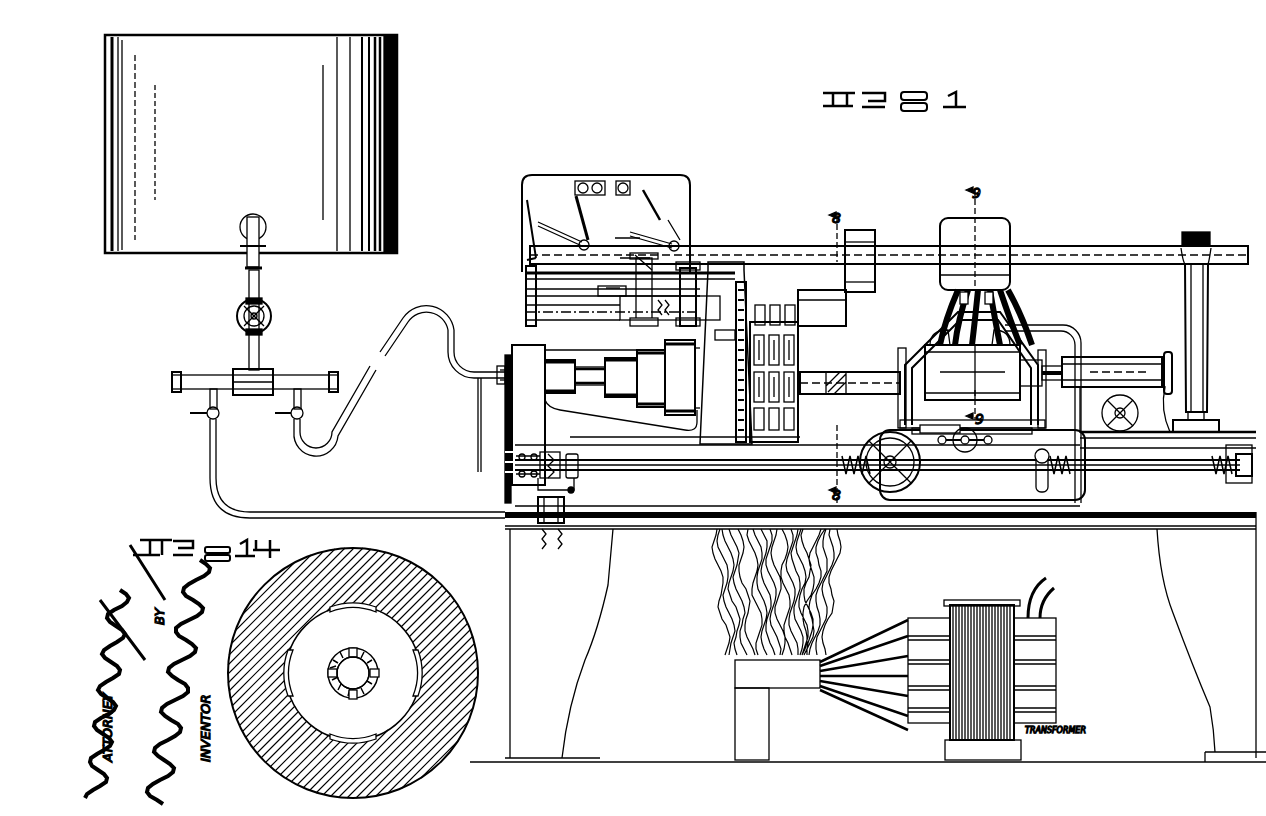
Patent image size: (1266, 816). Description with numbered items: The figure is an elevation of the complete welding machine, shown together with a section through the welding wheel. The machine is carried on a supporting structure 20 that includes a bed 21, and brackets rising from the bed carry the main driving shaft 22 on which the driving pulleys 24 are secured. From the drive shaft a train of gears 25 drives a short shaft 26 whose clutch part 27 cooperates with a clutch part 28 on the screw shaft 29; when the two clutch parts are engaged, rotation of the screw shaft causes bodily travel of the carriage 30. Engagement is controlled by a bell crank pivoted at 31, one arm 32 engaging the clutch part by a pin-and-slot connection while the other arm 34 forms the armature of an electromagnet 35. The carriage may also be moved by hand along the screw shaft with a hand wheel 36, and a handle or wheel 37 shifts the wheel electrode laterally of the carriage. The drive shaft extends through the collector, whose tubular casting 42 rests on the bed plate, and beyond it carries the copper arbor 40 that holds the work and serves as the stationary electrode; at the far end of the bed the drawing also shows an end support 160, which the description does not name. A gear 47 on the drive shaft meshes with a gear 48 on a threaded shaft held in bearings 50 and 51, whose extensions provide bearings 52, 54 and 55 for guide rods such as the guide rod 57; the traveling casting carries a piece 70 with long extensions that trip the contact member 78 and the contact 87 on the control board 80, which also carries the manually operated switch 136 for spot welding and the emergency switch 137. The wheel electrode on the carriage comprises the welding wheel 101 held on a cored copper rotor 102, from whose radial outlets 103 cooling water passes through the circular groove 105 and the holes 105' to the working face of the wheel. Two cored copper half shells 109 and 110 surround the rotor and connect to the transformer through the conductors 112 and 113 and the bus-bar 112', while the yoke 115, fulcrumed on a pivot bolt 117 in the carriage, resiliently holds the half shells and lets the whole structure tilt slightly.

In FIG. 1, the supporting structure 20 is at (1201, 640).
In FIG. 1, the bed 21 is at (1135, 512).
In FIG. 1, the main driving shaft 22 is at (590, 362).
In FIG. 1, the driving pulleys 24 is at (690, 382).
In FIG. 1, the train of gears 25 is at (513, 418).
In FIG. 1, the short shaft 26 is at (505, 480).
In FIG. 1, the clutch part 27 is at (540, 500).
In FIG. 1, the clutch part 28 is at (562, 452).
In FIG. 1, the screw shaft 29 is at (720, 472).
In FIG. 1, the carriage 30 is at (978, 492).
In FIG. 1, the pivot 31 is at (575, 490).
In FIG. 1, the bell crank arm 32 is at (578, 460).
In FIG. 1, the bell crank arm 34 is at (545, 512).
In FIG. 1, the electromagnet 35 is at (555, 525).
In FIG. 1, the hand wheel 36 is at (900, 492).
In FIG. 1, the operating handle or wheel 37 is at (985, 448).
In FIG. 1, the copper arbor 40 is at (860, 372).
In FIG. 1, the tubular casting 42 is at (800, 414).
In FIG. 1, the gear 47 is at (740, 404).
In FIG. 1, the gear 48 is at (768, 270).
In FIG. 1, the bearing 50 is at (690, 316).
In FIG. 1, the bearing 51 is at (525, 308).
In FIG. 1, the bearing 52 is at (525, 290).
In FIG. 1, the bearing 54 is at (525, 272).
In FIG. 1, the bearing 55 is at (690, 268).
In FIG. 1, the guide rod 57 is at (590, 275).
In FIG. 1, the piece 70 is at (672, 246).
In FIG. 1, the contact member 78 is at (645, 232).
In FIG. 1, the main insulating panel or control board 80 is at (686, 180).
In FIG. 1, the contact 87 is at (552, 232).
In FIG. 1, the welding wheel 101 is at (900, 340).
In FIG. 14, the welding wheel 101 is at (395, 580).
In FIG. 14, the copper rotor 102 is at (370, 660).
In FIG. 14, the radial outlets 103 is at (330, 668).
In FIG. 1, the circular groove 105 is at (1073, 351).
In FIG. 14, the circular groove 105 is at (397, 649).
In FIG. 14, the holes 105' is at (370, 707).
In FIG. 1, the half shell 109 is at (938, 358).
In FIG. 1, the half shell 110 is at (1010, 382).
In FIG. 1, the conductor 112 is at (968, 281).
In FIG. 1, the bus-bar 112' is at (889, 233).
In FIG. 1, the conductor 113 is at (1012, 292).
In FIG. 1, the yoke 115 is at (1012, 310).
In FIG. 1, the pivot bolt 117 is at (1030, 425).
In FIG. 1, the manually operated switch 136 is at (624, 182).
In FIG. 1, the emergency switch 137 is at (588, 180).
In FIG. 1, the tailstock 160 is at (1135, 362).